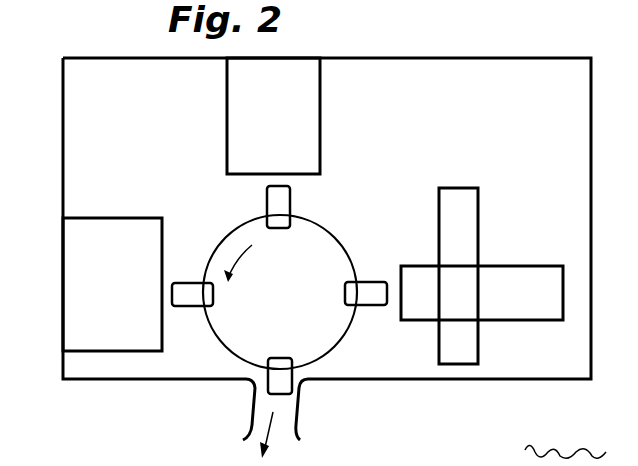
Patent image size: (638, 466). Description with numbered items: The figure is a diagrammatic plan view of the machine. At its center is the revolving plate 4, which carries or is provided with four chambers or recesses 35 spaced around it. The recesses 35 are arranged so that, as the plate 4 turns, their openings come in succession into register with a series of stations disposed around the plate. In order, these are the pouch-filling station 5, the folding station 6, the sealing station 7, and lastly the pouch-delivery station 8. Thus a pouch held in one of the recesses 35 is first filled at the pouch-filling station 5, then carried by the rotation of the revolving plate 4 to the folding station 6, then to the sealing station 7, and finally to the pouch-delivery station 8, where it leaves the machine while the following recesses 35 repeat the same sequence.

The revolving plate 4 is at (235, 340).
The pouch-filling station 5 is at (528, 305).
The folding station 6 is at (308, 80).
The sealing station 7 is at (80, 252).
The pouch-delivery station 8 is at (296, 400).
The chambers or recesses 35 is at (275, 202).